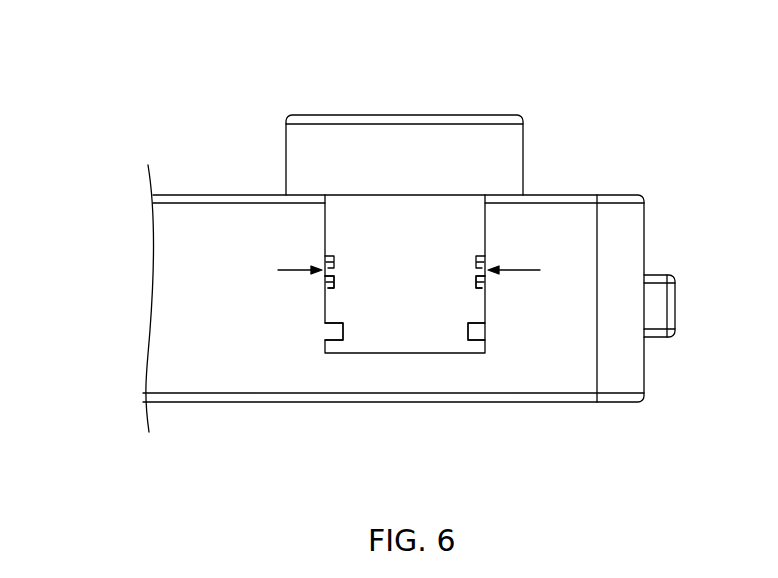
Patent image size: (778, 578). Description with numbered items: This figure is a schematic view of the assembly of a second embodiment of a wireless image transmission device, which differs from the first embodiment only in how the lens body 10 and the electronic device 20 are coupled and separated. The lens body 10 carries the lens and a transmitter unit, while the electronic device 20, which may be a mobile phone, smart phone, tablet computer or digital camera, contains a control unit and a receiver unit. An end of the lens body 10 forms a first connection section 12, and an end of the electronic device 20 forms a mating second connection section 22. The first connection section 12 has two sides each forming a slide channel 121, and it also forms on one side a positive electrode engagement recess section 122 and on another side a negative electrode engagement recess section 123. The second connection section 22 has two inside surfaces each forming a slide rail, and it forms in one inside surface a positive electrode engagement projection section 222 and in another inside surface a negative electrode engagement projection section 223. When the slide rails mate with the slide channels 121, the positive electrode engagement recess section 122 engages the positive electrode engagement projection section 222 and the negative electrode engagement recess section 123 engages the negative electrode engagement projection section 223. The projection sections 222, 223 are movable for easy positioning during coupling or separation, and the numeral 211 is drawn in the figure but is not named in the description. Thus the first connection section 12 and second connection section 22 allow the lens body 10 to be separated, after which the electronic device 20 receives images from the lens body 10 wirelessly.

The lens body 10 is at (301, 146).
The first connection section 12 is at (542, 60).
The slide channel 121 is at (487, 332).
The positive electrode engagement recess section 122 is at (338, 297).
The negative electrode engagement recess section 123 is at (480, 268).
The electronic device 20 is at (575, 237).
The second connection section 22 is at (67, 230).
The positive electrode engagement projection section 222 is at (472, 283).
The negative electrode engagement projection section 223 is at (328, 304).
The recess 211 is at (330, 332).